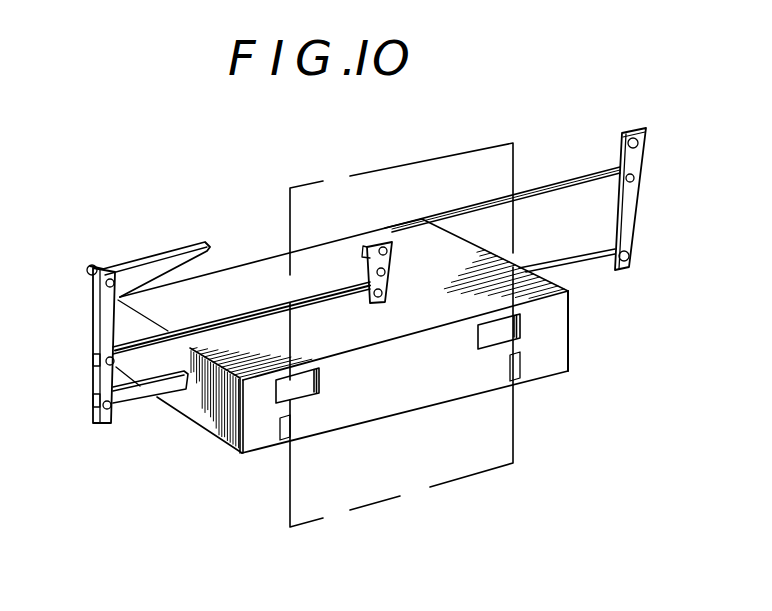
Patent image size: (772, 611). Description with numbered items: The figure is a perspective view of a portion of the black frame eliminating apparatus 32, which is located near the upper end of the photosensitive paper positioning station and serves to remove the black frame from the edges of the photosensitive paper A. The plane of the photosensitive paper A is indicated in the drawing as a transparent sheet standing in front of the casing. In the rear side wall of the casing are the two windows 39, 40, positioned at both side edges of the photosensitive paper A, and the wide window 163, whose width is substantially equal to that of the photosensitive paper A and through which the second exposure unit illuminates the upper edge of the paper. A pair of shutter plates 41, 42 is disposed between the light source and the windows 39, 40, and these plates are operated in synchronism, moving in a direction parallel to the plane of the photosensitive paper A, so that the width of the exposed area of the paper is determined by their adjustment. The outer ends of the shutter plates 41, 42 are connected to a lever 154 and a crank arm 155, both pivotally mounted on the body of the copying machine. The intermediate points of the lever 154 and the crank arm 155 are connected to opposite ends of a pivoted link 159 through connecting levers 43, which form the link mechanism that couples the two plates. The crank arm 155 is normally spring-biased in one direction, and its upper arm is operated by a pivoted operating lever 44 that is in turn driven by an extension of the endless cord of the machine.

The black frame eliminating apparatus 32 is at (198, 436).
The window 39 is at (500, 328).
The window 40 is at (308, 385).
The shutter plate 41 is at (598, 263).
The shutter plate 42 is at (140, 396).
The connecting lever 43 is at (199, 328).
The pivoted operating lever 44 is at (258, 277).
The lever 154 is at (628, 212).
The crank arm 155 is at (110, 317).
The pivoted link 159 is at (388, 278).
The window 163 is at (340, 417).
The photosensitive paper A is at (434, 474).